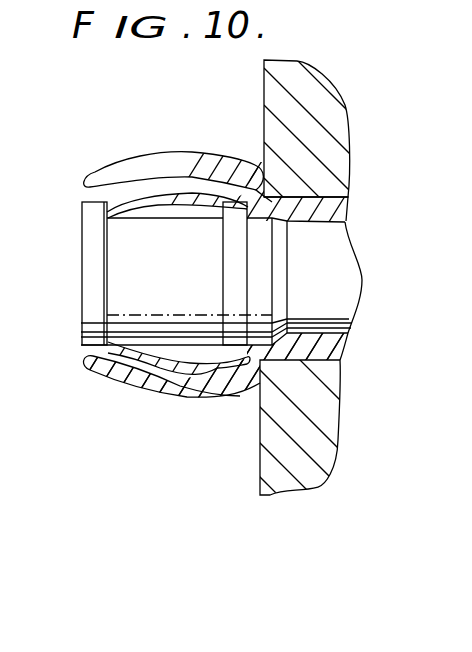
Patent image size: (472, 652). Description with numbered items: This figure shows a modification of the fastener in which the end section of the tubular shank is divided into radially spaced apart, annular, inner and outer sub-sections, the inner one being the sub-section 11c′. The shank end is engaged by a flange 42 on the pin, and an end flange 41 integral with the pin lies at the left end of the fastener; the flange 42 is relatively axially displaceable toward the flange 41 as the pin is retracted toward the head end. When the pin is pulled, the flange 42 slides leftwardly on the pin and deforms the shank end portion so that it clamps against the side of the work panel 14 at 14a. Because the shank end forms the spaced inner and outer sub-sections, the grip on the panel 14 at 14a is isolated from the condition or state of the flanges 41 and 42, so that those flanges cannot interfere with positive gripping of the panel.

The work panel 14 is at (270, 462).
The work panel side 14a is at (250, 178).
The end flange 41 is at (90, 308).
The flange 42 is at (218, 262).
The inner annular sub-section 11c′ is at (148, 190).